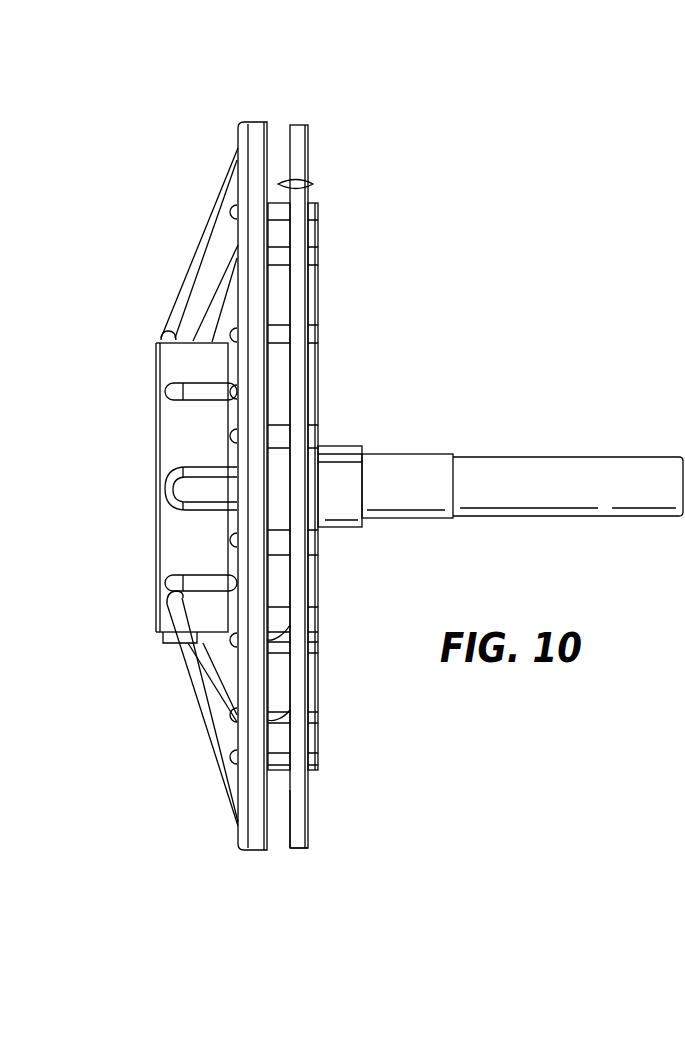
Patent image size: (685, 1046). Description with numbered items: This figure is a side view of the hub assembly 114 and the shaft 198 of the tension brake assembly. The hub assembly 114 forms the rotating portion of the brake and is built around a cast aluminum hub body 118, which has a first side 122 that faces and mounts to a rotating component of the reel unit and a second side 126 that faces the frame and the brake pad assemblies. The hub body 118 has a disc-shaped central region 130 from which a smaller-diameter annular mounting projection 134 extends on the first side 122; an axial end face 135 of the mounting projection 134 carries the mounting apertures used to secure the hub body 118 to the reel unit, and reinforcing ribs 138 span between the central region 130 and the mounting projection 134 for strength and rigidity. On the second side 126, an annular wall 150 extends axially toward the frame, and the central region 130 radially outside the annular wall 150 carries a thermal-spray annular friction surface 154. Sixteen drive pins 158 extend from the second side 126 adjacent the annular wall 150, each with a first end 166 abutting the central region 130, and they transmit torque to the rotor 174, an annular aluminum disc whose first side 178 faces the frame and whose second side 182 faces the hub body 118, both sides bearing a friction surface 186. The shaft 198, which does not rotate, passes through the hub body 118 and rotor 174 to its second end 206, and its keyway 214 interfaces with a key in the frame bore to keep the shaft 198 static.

The first side 122 is at (170, 168).
The disc-shaped central region 130 is at (257, 123).
The annular friction surface 154 is at (268, 150).
The second side 126 is at (349, 152).
The friction surface 186 is at (313, 184).
The hub assembly 114 is at (180, 273).
The hub body 118 is at (180, 333).
The annular wall 150 is at (313, 298).
The annular mounting projection 134 is at (185, 438).
The axial end face 135 is at (157, 568).
The keyway 214 is at (343, 455).
The shaft 198 is at (500, 472).
The second end 206 is at (684, 526).
The first end 166 is at (290, 625).
The drive pins 158 is at (315, 643).
The reinforcing ribs 138 is at (205, 722).
The first side 178 is at (310, 820).
The second side 182 is at (287, 840).
The rotor 174 is at (308, 852).